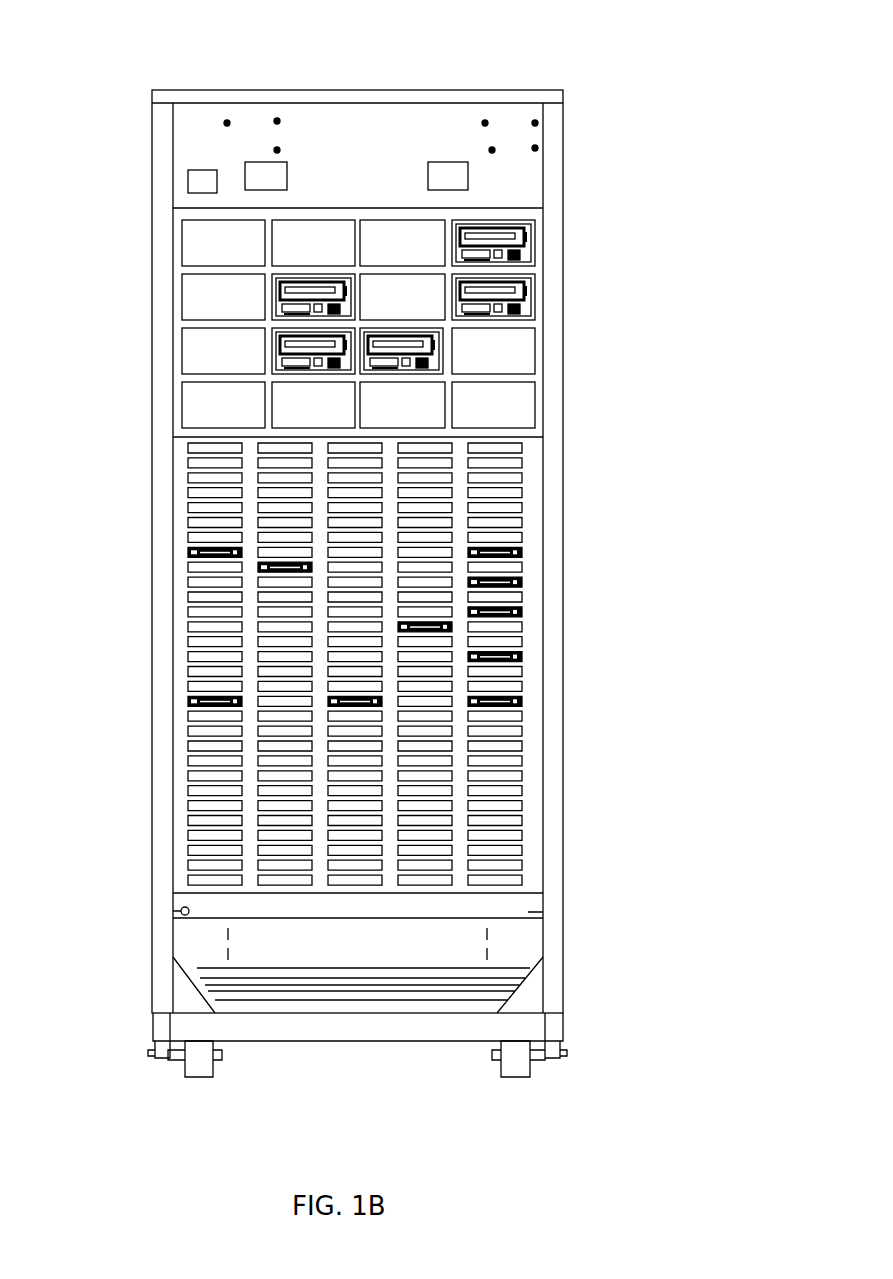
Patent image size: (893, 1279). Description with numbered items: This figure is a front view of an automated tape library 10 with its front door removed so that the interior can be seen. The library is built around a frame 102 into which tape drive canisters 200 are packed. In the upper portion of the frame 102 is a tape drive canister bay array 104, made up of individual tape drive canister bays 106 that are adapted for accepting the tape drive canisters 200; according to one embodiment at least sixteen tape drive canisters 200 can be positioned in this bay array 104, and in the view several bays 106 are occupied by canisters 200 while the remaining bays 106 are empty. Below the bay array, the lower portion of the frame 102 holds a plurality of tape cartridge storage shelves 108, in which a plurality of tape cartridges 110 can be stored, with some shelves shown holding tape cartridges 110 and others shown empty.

The automated tape library 10 is at (708, 94).
The frame 102 is at (178, 215).
The tape drive canister bay array 104 is at (142, 218).
The tape drive canister bay 106 is at (242, 257).
The tape cartridge storage shelf 108 is at (141, 443).
The tape cartridge 110 is at (528, 611).
The tape drive canister 200 is at (533, 292).